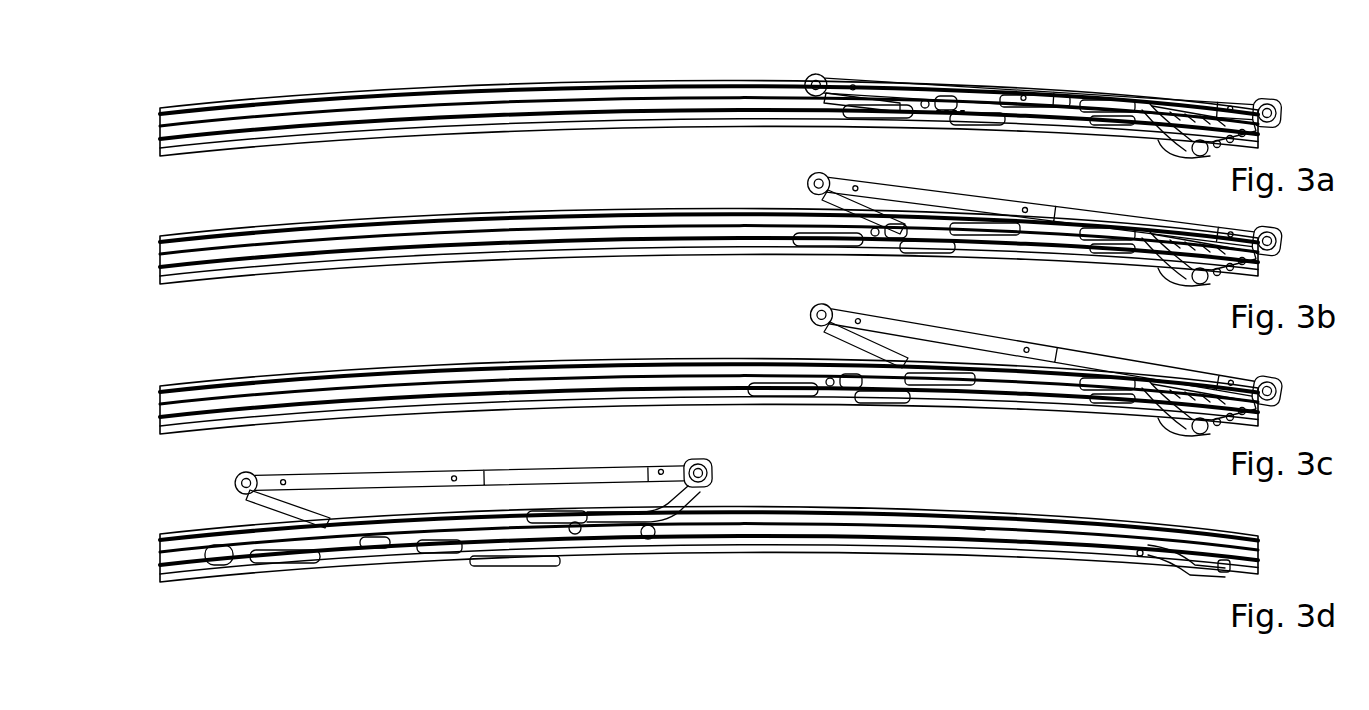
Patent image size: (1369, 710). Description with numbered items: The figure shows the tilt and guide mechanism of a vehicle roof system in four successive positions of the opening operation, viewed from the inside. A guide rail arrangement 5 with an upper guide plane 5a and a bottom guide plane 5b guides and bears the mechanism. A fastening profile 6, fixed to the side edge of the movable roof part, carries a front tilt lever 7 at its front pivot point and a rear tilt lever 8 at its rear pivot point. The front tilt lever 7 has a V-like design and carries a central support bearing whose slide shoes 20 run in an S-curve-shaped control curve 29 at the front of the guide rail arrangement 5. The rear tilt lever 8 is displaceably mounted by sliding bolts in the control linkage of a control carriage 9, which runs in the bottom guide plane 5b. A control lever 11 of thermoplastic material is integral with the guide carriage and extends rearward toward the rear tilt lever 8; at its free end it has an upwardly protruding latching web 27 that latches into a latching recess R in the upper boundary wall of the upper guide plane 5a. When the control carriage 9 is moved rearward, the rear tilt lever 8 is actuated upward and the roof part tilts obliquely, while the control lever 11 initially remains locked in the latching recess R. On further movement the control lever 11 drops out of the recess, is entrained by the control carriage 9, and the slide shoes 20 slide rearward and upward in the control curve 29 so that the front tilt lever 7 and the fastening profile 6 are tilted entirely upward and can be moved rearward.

In FIG. 3A, the guide rail arrangement 5 is at (601, 80).
In FIG. 3B, the guide rail arrangement 5 is at (709, 219).
In FIG. 3C, the guide rail arrangement 5 is at (709, 370).
In FIG. 3D, the guide rail arrangement 5 is at (802, 500).
In FIG. 3A, the upper guide plane 5a is at (551, 103).
In FIG. 3B, the upper guide plane 5a is at (709, 210).
In FIG. 3C, the upper guide plane 5a is at (709, 361).
In FIG. 3D, the upper guide plane 5a is at (913, 524).
In FIG. 3A, the bottom guide plane 5b is at (533, 122).
In FIG. 3B, the bottom guide plane 5b is at (709, 277).
In FIG. 3C, the bottom guide plane 5b is at (709, 414).
In FIG. 3D, the bottom guide plane 5b is at (893, 565).
In FIG. 3A, the fastening profile 6 is at (1090, 95).
In FIG. 3B, the fastening profile 6 is at (1044, 211).
In FIG. 3C, the fastening profile 6 is at (1045, 353).
In FIG. 3D, the fastening profile 6 is at (585, 468).
In FIG. 3A, the front tilt lever 7 is at (1178, 110).
In FIG. 3B, the front tilt lever 7 is at (1199, 230).
In FIG. 3C, the front tilt lever 7 is at (1199, 377).
In FIG. 3D, the front tilt lever 7 is at (690, 497).
In FIG. 3A, the rear tilt lever 8 is at (862, 102).
In FIG. 3B, the rear tilt lever 8 is at (832, 208).
In FIG. 3C, the rear tilt lever 8 is at (837, 345).
In FIG. 3D, the rear tilt lever 8 is at (300, 512).
In FIG. 3A, the control carriage 9 is at (990, 128).
In FIG. 3B, the control carriage 9 is at (874, 258).
In FIG. 3C, the control carriage 9 is at (829, 408).
In FIG. 3D, the control carriage 9 is at (323, 562).
In FIG. 3A, the control lever 11 is at (1040, 105).
In FIG. 3B, the control lever 11 is at (1042, 203).
In FIG. 3C, the control lever 11 is at (1020, 388).
In FIG. 3D, the control lever 11 is at (492, 562).
In FIG. 3A, the slide shoe 20 is at (1200, 156).
In FIG. 3B, the slide shoe 20 is at (1192, 298).
In FIG. 3C, the slide shoe 20 is at (1194, 451).
In FIG. 3D, the slide shoe 20 is at (648, 555).
In FIG. 3A, the latching web 27 is at (947, 95).
In FIG. 3B, the latching web 27 is at (899, 231).
In FIG. 3C, the latching web 27 is at (912, 340).
In FIG. 3A, the control curve 29 is at (1172, 148).
In FIG. 3B, the control curve 29 is at (1193, 287).
In FIG. 3C, the control curve 29 is at (1194, 438).
In FIG. 3D, the control curve 29 is at (1180, 575).
In FIG. 3A, the latching recess R is at (938, 97).
In FIG. 3B, the latching recess R is at (875, 232).
In FIG. 3C, the latching recess R is at (920, 341).
In FIG. 3D, the latching recess R is at (958, 524).